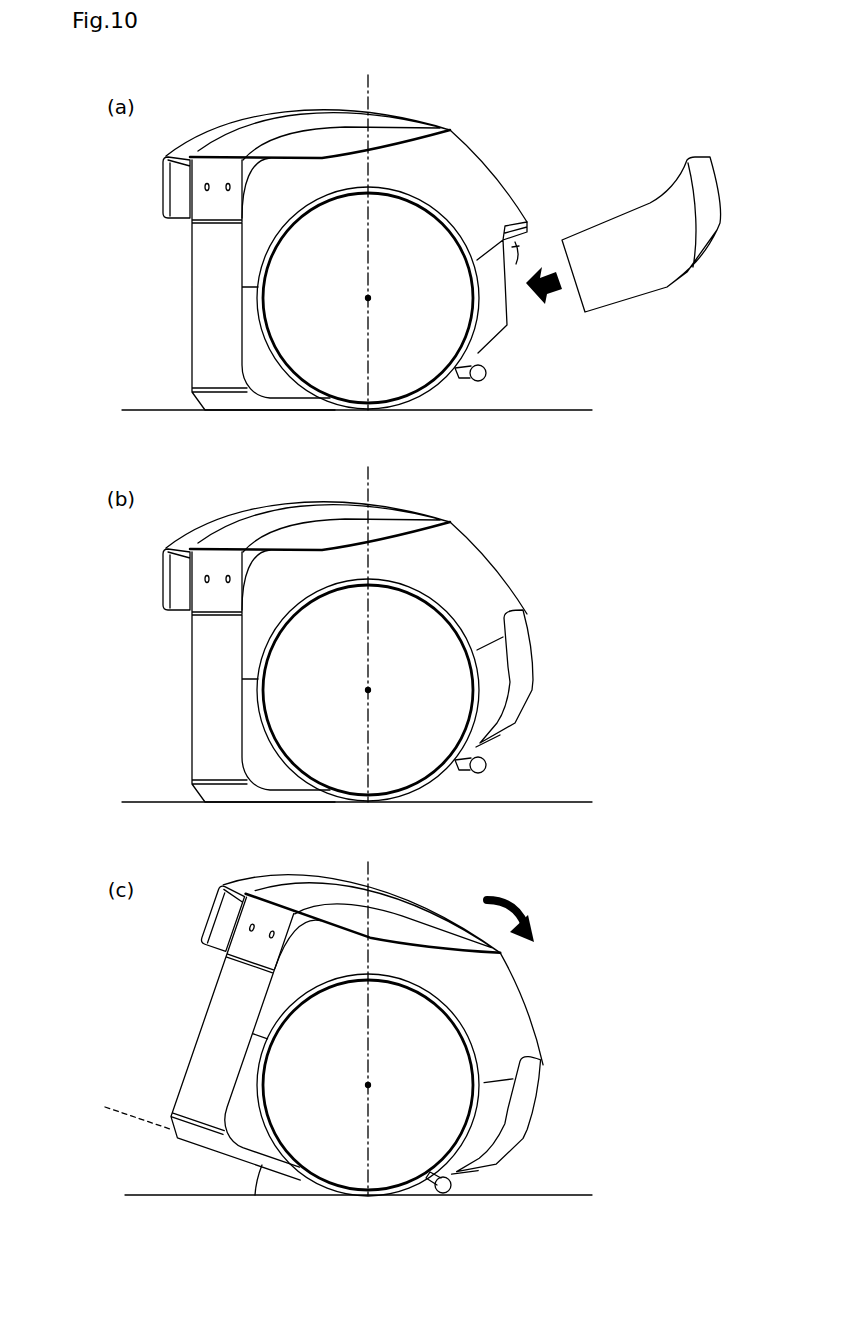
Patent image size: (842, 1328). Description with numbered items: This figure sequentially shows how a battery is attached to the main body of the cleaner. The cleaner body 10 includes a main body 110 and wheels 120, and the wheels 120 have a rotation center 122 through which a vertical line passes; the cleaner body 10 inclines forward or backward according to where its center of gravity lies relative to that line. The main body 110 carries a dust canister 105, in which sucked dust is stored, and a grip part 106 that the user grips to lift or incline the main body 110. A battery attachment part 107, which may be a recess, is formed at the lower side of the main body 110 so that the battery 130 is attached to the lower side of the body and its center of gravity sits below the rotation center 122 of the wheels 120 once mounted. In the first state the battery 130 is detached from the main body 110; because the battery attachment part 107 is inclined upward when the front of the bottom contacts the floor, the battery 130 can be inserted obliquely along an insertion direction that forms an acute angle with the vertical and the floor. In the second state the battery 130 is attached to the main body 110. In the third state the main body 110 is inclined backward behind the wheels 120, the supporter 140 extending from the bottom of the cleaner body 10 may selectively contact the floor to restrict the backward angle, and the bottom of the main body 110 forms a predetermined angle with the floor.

The cleaner body 10 is at (457, 118).
The dust canister 105 is at (203, 333).
The grip part 106 is at (310, 120).
The battery attachment part 107 is at (518, 254).
The main body 110 is at (485, 167).
The wheels 120 is at (287, 272).
The rotation center 122 is at (368, 298).
The battery 130 is at (702, 163).
The supporter 140 is at (487, 373).